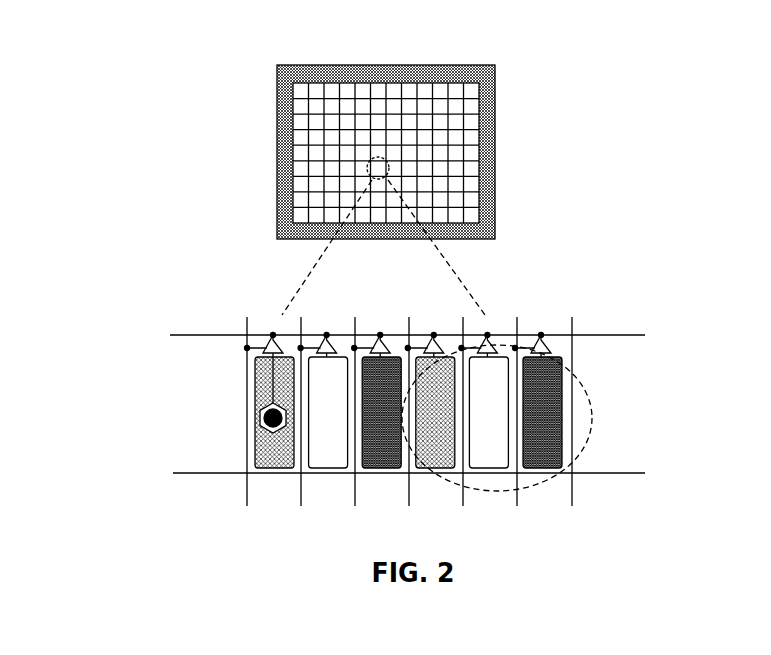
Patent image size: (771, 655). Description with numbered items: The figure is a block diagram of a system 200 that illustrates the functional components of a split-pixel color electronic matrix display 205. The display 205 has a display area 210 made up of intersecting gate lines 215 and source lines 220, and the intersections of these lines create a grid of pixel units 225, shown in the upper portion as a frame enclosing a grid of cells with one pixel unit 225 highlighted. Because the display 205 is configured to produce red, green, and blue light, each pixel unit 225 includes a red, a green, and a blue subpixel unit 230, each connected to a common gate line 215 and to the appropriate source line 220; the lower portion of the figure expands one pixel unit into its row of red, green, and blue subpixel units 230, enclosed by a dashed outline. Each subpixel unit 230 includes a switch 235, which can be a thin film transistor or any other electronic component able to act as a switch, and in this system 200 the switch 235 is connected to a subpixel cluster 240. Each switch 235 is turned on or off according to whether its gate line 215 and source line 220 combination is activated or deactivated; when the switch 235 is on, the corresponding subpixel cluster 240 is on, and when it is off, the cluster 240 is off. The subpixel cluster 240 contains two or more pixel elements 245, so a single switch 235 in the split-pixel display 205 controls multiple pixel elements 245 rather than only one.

The system 200 is at (62, 9).
The split-pixel color electronic matrix display 205 is at (405, 262).
The display area 210 is at (480, 88).
The gate lines 215 is at (315, 112).
The source lines 220 is at (478, 135).
The pixel units 225 is at (320, 151).
The subpixel unit 230 is at (568, 360).
The switch 235 is at (265, 343).
The subpixel cluster 240 is at (258, 416).
The pixel elements 245 is at (264, 427).